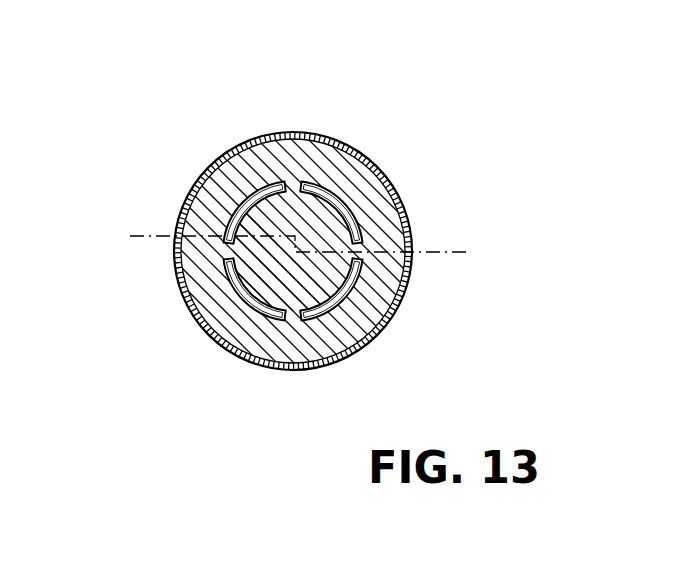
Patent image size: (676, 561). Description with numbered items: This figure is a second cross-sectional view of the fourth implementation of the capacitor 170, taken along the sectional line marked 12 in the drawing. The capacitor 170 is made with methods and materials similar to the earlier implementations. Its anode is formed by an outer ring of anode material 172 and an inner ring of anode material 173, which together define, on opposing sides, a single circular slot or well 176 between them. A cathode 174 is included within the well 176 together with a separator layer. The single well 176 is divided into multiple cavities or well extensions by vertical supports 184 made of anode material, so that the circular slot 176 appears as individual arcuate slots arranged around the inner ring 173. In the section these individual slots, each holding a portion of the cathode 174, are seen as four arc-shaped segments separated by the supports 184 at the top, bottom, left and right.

The section line 12- 12 is at (122, 209).
The capacitor 170 is at (329, 113).
The outer ring of anode material 172 is at (397, 189).
The inner ring of anode material 173 is at (222, 320).
The cathode 174 is at (242, 192).
The circular slot 176 is at (362, 219).
The vertical supports 184 is at (267, 277).